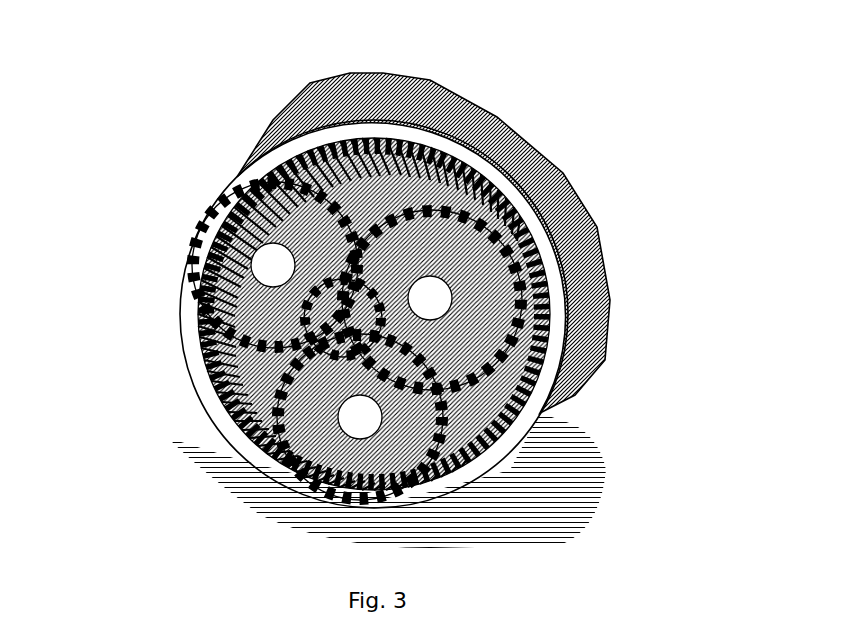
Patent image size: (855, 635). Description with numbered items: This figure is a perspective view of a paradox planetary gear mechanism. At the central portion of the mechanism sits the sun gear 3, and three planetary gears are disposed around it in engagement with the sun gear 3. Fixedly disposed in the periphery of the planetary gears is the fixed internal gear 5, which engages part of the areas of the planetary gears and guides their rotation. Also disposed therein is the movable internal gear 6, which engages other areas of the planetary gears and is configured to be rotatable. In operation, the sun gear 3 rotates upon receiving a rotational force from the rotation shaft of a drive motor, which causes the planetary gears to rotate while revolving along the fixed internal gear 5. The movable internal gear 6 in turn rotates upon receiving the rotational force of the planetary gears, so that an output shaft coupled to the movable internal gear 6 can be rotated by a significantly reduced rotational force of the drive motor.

The movable internal gear 6 is at (503, 112).
The fixed internal gear 5 is at (183, 320).
The sun gear 3 is at (228, 375).